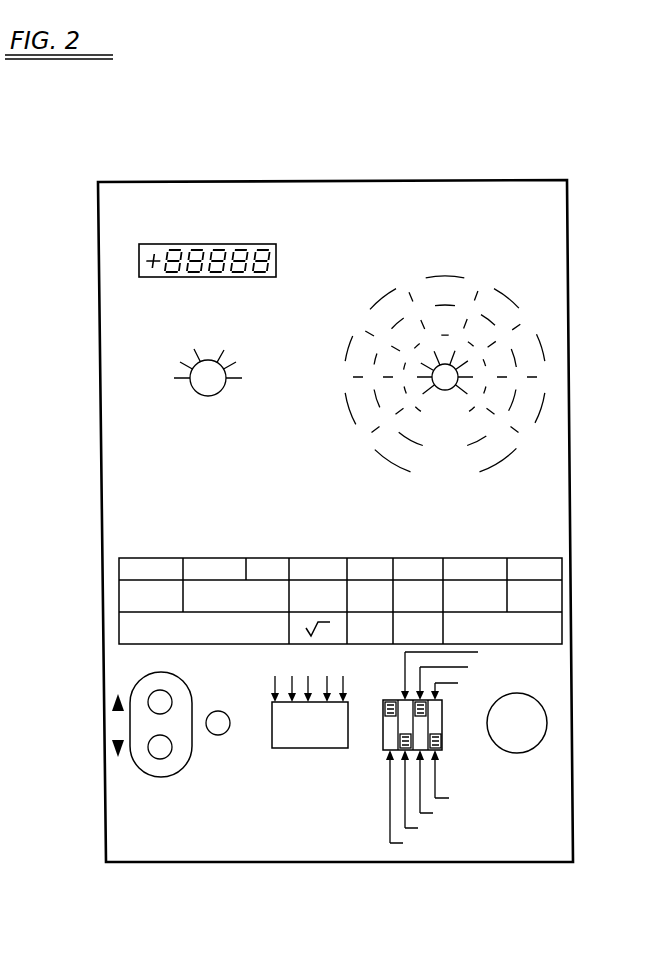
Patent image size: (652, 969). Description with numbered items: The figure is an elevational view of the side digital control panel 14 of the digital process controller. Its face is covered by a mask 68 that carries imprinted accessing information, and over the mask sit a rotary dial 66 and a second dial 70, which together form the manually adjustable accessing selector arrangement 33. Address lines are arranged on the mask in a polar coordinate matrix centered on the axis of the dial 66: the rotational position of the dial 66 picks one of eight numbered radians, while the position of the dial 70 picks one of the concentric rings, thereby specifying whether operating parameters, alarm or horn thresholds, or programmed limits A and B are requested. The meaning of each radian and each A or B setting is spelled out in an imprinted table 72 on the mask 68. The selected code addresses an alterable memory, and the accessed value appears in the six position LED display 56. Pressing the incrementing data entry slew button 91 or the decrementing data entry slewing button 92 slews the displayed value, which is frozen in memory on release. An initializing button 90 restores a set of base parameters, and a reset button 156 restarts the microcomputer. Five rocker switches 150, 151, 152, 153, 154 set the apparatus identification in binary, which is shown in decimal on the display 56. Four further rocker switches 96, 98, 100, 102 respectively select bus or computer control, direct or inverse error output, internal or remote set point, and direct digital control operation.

The digital control panel 14 is at (584, 485).
The manual input adjusting selector arrangement 33 is at (150, 453).
The six position LED display 56 is at (277, 249).
The rotary dial 66 is at (457, 370).
The mask 68 is at (343, 263).
The second dial 70 is at (207, 392).
The table 72 is at (282, 550).
The initializing button 90 is at (218, 711).
The incrementing data entry slew button 91 is at (155, 697).
The decrementing data entry slewing button 92 is at (157, 752).
The rocker switch 96 is at (383, 704).
The rocker switch 98 is at (393, 746).
The rocker switch 100 is at (442, 712).
The rocker switch 102 is at (442, 745).
The rocker switch 150 is at (274, 688).
The rocker switch 151 is at (290, 688).
The rocker switch 152 is at (310, 688).
The rocker switch 153 is at (330, 688).
The rocker switch 154 is at (346, 688).
The reset button 156 is at (545, 710).